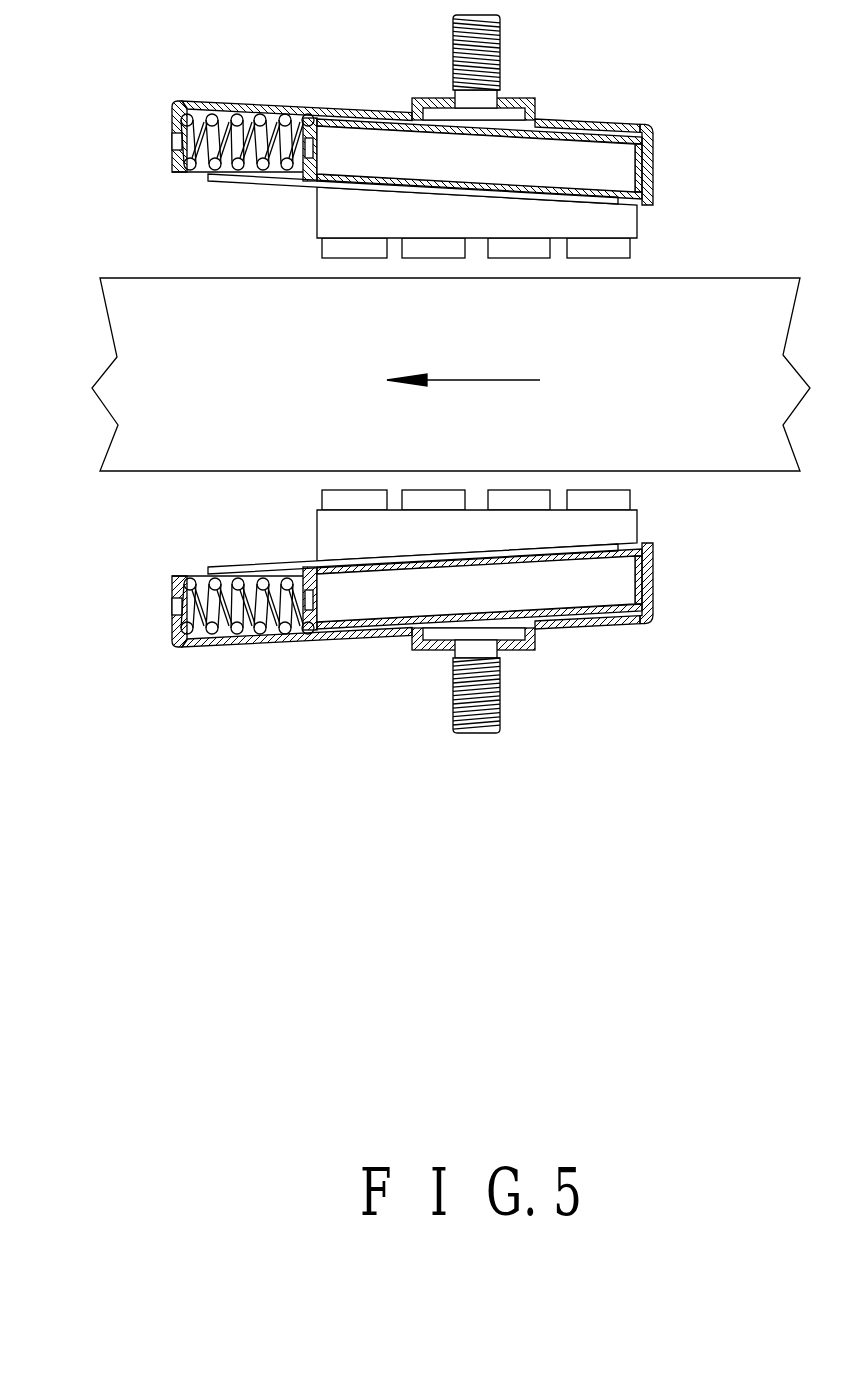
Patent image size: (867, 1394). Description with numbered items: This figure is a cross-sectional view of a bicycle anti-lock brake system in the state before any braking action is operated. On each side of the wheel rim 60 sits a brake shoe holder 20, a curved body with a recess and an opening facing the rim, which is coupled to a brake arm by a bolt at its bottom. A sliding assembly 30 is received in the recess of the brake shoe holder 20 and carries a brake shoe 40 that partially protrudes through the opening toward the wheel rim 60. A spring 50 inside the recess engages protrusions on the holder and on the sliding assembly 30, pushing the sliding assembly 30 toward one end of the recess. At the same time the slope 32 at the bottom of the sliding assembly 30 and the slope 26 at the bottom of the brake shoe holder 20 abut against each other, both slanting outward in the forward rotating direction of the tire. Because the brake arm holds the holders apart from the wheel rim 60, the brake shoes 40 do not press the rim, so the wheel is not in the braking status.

The brake shoe holder 20 is at (563, 628).
The slope 26 is at (270, 630).
The sliding assembly 30 is at (632, 625).
The slope 32 is at (402, 633).
The brake shoe 40 is at (630, 522).
The spring 50 is at (207, 582).
The wheel rim 60 is at (155, 293).